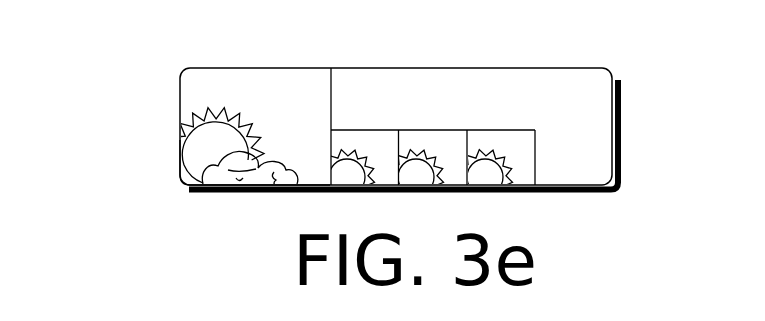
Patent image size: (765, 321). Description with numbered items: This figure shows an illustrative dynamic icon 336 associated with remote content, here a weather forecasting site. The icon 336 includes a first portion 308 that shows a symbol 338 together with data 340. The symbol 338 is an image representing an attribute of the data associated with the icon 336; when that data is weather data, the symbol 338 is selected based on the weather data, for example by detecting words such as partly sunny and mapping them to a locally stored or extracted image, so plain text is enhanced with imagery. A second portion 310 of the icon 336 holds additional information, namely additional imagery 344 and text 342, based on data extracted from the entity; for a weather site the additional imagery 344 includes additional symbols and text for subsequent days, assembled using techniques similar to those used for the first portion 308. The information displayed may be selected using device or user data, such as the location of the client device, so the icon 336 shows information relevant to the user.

The icon 336 is at (128, 55).
The symbol 338 is at (213, 150).
The data 340 is at (311, 81).
The text 342 is at (555, 93).
The additional imagery 344 is at (547, 152).
The first portion 308 is at (183, 187).
The second portion 310 is at (613, 192).